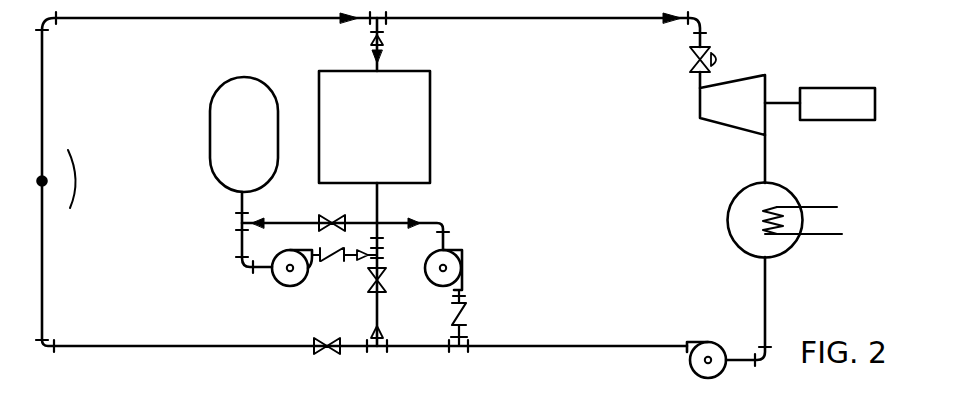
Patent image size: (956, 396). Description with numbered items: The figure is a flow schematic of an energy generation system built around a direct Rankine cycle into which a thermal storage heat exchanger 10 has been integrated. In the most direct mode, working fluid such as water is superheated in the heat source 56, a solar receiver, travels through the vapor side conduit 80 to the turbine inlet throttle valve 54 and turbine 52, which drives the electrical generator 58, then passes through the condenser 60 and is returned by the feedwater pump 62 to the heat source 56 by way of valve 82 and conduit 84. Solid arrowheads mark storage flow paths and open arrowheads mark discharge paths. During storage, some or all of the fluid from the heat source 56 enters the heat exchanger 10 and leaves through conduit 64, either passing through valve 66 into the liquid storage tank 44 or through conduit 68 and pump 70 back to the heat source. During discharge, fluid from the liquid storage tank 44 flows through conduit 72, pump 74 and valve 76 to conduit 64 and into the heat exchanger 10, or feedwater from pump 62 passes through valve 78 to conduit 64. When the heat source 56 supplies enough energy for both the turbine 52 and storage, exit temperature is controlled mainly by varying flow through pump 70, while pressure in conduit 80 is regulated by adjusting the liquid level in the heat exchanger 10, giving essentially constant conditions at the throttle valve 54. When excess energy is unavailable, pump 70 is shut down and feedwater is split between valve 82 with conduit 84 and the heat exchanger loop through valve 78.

The thermal storage heat exchanger 10 is at (430, 130).
The liquid storage tank 44 is at (208, 129).
The turbine 52 is at (735, 82).
The turbine inlet throttle valve 54 is at (690, 61).
The heat source 56 is at (58, 172).
The electrical generator 58 is at (832, 88).
The condenser 60 is at (728, 213).
The feedwater pump 62 is at (372, 52).
The conduit 64 is at (376, 203).
The valve 66 is at (322, 219).
The conduit 68 is at (395, 221).
The pump 70 is at (466, 267).
The conduit 72 is at (240, 248).
The pump 74 is at (280, 283).
The valve 76 is at (333, 256).
The valve 78 is at (388, 280).
The conduit 80 is at (137, 20).
The valve 82 is at (325, 337).
The conduit 84 is at (224, 343).